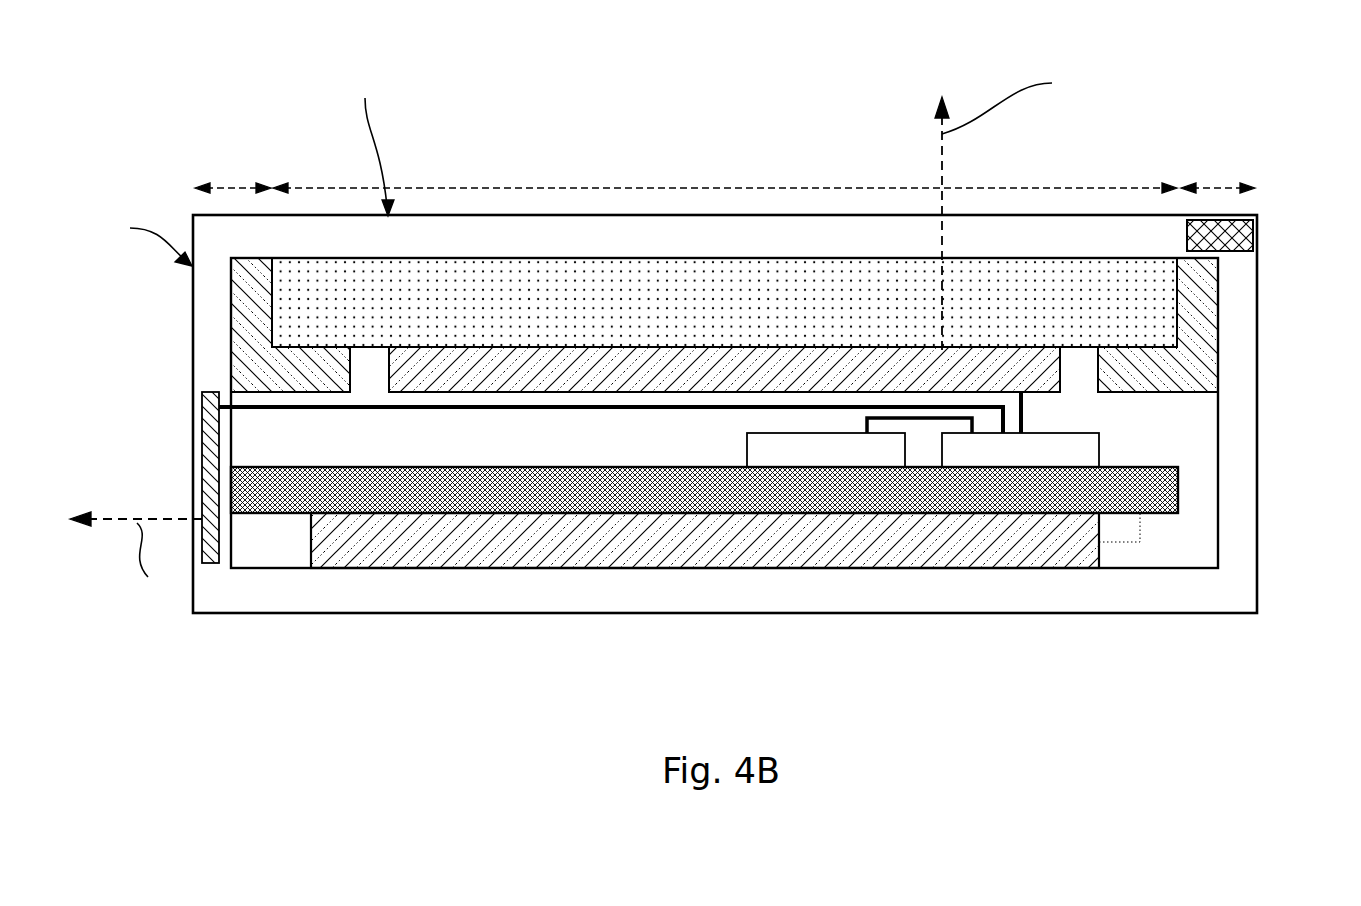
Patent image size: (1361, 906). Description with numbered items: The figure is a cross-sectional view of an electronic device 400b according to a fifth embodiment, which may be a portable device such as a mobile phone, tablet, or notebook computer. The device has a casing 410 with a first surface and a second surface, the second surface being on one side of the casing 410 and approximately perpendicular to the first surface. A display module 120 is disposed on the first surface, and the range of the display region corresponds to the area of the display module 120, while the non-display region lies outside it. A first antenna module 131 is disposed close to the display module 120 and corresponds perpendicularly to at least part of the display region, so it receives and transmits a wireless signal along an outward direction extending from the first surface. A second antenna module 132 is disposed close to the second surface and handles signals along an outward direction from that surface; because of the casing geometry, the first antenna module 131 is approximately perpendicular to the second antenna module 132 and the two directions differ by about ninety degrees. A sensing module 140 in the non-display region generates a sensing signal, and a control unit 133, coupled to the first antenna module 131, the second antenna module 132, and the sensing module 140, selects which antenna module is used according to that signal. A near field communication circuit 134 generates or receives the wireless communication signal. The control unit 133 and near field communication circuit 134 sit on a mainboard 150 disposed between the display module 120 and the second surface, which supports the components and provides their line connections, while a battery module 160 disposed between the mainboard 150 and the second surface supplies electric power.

The electronic device 400b is at (710, 368).
The casing 410 is at (478, 592).
The display module 120 is at (724, 302).
The first antenna module 131 is at (724, 369).
The second antenna module 132 is at (207, 442).
The control unit 133 is at (826, 450).
The near field communication circuit 134 is at (1020, 450).
The sensing module 140 is at (1224, 237).
The mainboard 150 is at (704, 490).
The battery module 160 is at (705, 540).